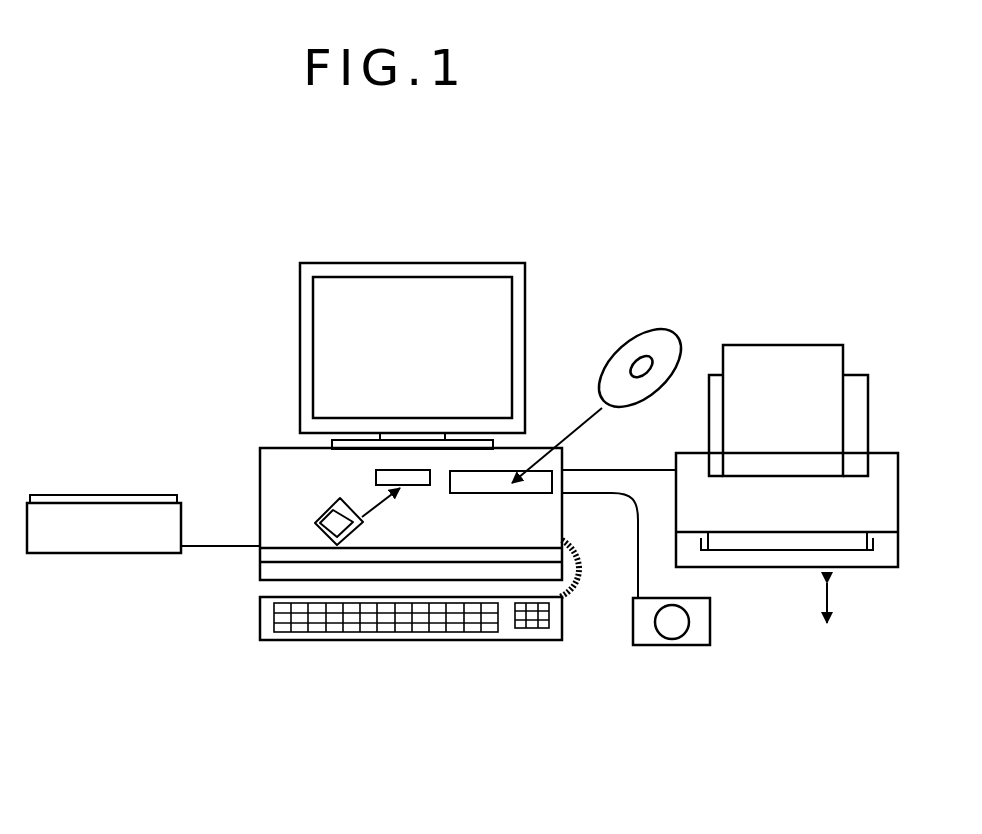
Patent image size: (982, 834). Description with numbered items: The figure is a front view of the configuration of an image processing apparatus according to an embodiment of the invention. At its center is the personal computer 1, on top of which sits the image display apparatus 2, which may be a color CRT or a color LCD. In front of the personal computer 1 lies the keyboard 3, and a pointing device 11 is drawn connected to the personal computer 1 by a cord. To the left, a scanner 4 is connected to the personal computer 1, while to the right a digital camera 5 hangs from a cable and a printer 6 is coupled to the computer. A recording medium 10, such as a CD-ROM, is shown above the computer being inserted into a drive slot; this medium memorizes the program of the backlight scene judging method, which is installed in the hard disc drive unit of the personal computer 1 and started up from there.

The personal computer 1 is at (272, 447).
The image display apparatus 2 is at (525, 322).
The keyboard 3 is at (280, 640).
The scanner 4 is at (100, 545).
The digital camera 5 is at (637, 645).
The printer 6 is at (792, 567).
The recording medium 10 is at (675, 328).
The mouse 11 is at (322, 515).